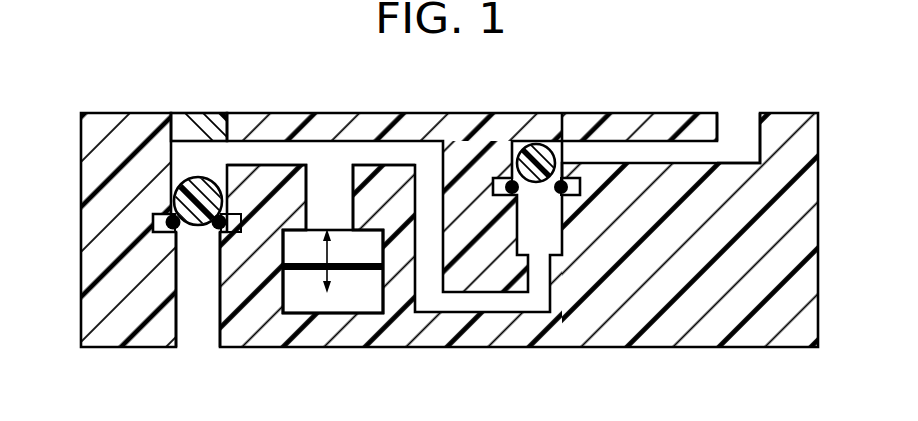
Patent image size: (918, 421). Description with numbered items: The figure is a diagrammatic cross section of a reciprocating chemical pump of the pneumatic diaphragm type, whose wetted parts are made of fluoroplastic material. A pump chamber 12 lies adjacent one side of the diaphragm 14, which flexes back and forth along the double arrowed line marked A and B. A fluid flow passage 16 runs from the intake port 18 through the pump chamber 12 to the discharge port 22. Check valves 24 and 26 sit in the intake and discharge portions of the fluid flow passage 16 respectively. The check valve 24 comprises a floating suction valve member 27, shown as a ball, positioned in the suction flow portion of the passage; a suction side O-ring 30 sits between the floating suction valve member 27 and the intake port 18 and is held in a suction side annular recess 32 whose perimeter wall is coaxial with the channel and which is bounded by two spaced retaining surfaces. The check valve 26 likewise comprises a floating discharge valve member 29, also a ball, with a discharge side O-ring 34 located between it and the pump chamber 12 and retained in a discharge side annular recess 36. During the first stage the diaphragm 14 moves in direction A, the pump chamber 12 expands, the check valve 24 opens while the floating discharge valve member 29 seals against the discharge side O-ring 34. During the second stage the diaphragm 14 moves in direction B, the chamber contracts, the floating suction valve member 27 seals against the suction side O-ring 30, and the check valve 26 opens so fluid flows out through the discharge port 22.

The pump chamber 12 is at (352, 250).
The diaphragm 14 is at (305, 250).
The fluid flow passage 16 is at (272, 153).
The intake port 18 is at (193, 325).
The discharge port 22 is at (742, 116).
The check valve 24 is at (203, 160).
The check valve 26 is at (540, 240).
The floating suction valve member 27 is at (170, 207).
The floating discharge valve member 29 is at (563, 146).
The suction side O-ring 30 is at (157, 214).
The suction side annular recess 32 is at (80, 325).
The discharge side O-ring 34 is at (566, 188).
The discharge side annular recess 36 is at (495, 195).